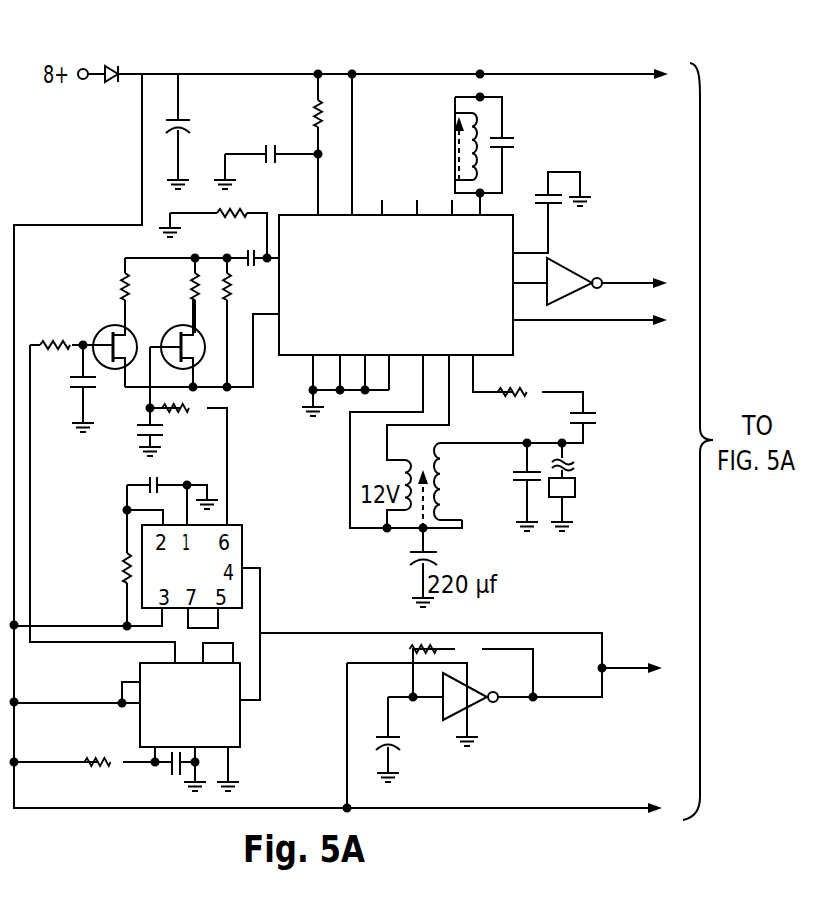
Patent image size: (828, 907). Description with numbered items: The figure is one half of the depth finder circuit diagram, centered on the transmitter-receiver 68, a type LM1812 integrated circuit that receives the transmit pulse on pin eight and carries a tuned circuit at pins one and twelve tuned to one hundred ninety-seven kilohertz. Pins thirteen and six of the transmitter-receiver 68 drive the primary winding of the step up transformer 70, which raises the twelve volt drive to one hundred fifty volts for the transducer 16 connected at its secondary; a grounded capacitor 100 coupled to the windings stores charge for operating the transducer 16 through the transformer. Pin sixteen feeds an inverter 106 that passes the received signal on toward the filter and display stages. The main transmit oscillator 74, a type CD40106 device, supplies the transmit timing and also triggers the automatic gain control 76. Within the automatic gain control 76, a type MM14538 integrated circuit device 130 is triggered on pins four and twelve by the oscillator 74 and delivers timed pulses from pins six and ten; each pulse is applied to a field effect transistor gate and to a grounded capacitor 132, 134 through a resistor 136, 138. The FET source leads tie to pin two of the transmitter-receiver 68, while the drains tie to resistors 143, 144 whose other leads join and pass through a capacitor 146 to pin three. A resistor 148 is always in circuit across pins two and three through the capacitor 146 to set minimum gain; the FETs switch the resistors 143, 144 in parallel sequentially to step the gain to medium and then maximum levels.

The transducer 16 is at (576, 504).
The transmitter-receiver 68 is at (337, 215).
The step up transformer 70 is at (452, 498).
The main transmit oscillator 74 is at (443, 720).
The automatic gain control 76 is at (245, 403).
The capacitor 100 is at (533, 485).
The inverter 106 is at (572, 272).
The integrated circuit device 130 is at (242, 723).
The capacitor 132 is at (143, 440).
The capacitor 134 is at (80, 405).
The resistor 136 is at (197, 413).
The resistor 138 is at (63, 340).
The resistor 143 is at (192, 300).
The resistor 144 is at (128, 293).
The capacitor 146 is at (170, 213).
The resistor 148 is at (253, 300).